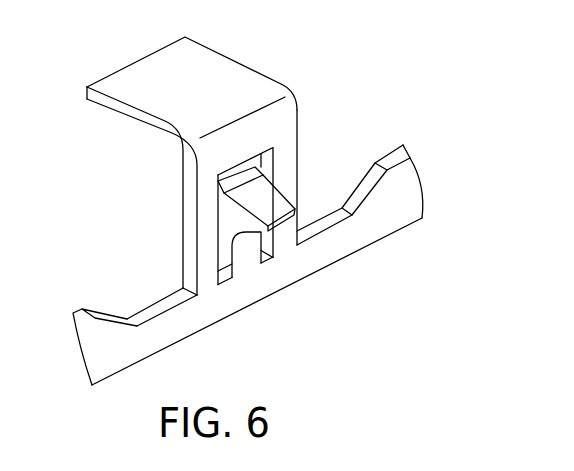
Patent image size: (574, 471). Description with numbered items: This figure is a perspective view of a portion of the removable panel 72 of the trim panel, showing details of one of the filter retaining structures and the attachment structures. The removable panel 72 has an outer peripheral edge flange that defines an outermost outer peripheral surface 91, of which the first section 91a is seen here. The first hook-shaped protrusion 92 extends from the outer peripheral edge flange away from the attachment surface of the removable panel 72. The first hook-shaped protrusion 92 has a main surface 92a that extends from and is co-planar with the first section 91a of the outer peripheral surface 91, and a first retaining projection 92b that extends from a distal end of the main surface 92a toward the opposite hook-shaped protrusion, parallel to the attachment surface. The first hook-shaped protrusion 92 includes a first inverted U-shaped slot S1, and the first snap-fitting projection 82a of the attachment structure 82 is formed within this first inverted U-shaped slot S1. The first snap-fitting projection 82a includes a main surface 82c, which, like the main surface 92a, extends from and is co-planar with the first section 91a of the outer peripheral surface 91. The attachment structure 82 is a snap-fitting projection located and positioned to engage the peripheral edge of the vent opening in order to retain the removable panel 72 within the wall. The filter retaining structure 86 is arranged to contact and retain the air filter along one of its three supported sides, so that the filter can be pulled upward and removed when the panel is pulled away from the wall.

The removable panel 72 is at (203, 333).
The attachment structure 82 is at (263, 200).
The first snap-fitting projection 82a is at (235, 182).
The main surface 82c is at (245, 257).
The filter retaining structure 86 is at (153, 75).
The outer peripheral surface 91 is at (390, 212).
The first section 91a is at (158, 333).
The first hook-shaped protrusion 92 is at (280, 118).
The main surface 92a is at (283, 158).
The first retaining projection 92b is at (223, 75).
The first inverted U-shaped slot S1 is at (225, 253).